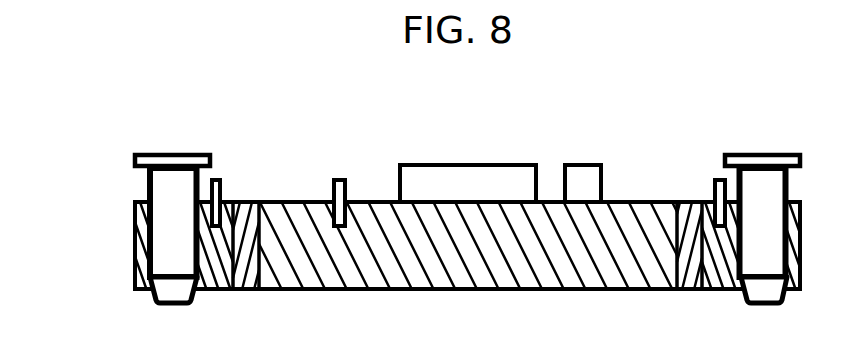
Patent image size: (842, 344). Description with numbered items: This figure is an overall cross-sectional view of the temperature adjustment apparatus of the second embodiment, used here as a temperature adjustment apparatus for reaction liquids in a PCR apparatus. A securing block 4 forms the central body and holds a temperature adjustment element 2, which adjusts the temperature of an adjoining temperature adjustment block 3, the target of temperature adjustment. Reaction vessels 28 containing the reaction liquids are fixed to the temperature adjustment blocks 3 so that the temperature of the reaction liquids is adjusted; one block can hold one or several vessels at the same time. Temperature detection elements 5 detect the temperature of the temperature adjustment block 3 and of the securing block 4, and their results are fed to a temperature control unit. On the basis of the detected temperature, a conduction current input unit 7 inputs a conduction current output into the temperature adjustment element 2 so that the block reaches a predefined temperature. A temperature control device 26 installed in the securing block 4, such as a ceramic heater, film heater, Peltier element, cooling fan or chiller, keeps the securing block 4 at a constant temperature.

The temperature adjustment element 2 is at (250, 203).
The temperature adjustment block 3 is at (145, 272).
The securing block 4 is at (640, 203).
The temperature detection element 5 is at (221, 200).
The conduction current input unit 7 is at (588, 163).
The temperature control device 26 is at (480, 163).
The reaction vessel 28 is at (158, 152).